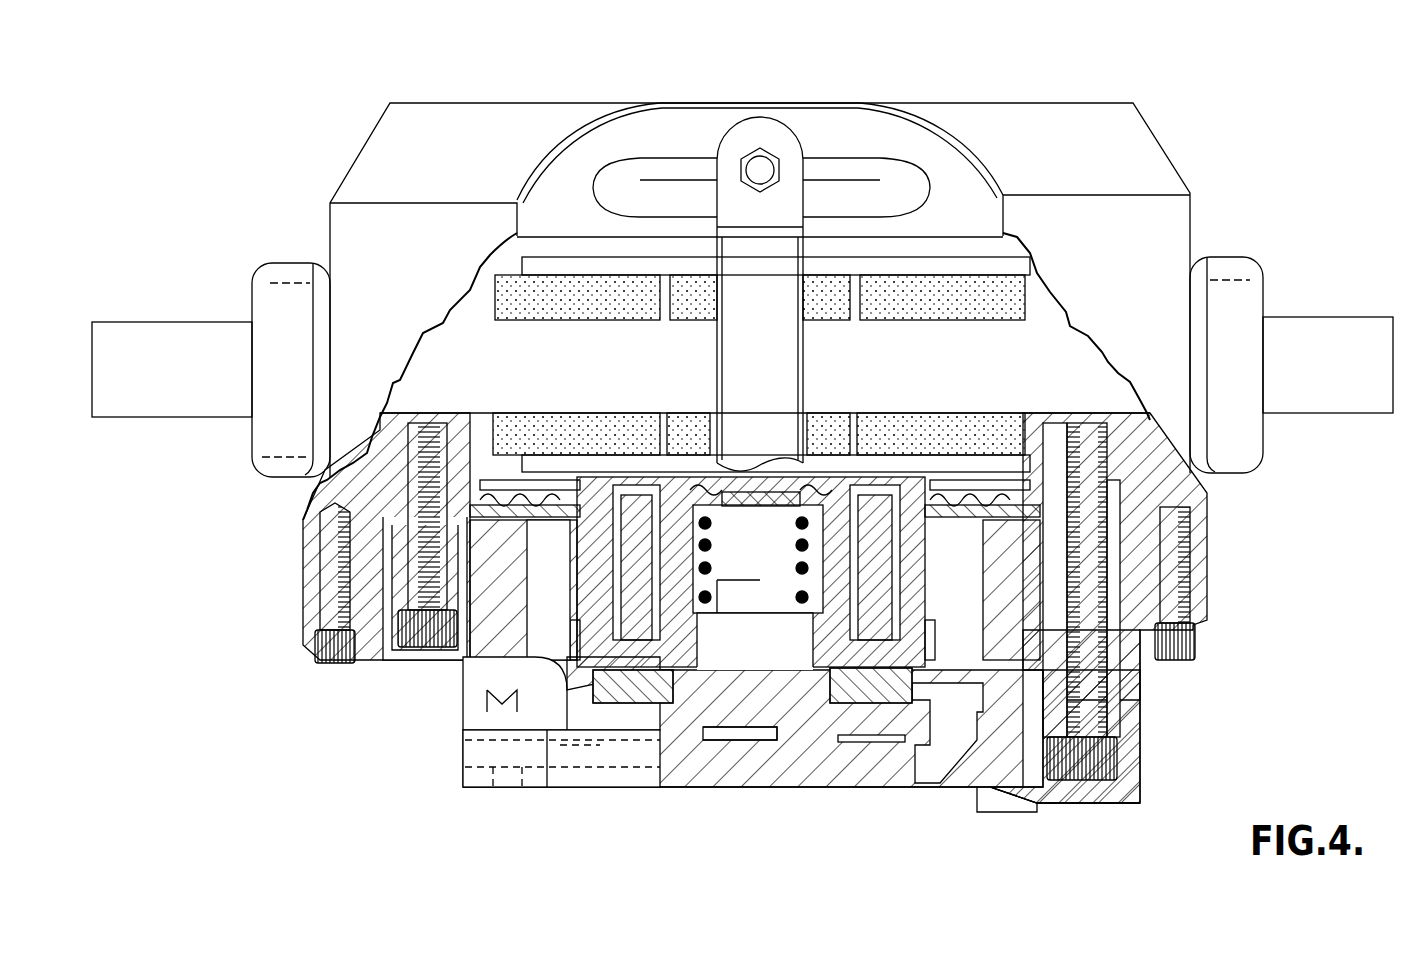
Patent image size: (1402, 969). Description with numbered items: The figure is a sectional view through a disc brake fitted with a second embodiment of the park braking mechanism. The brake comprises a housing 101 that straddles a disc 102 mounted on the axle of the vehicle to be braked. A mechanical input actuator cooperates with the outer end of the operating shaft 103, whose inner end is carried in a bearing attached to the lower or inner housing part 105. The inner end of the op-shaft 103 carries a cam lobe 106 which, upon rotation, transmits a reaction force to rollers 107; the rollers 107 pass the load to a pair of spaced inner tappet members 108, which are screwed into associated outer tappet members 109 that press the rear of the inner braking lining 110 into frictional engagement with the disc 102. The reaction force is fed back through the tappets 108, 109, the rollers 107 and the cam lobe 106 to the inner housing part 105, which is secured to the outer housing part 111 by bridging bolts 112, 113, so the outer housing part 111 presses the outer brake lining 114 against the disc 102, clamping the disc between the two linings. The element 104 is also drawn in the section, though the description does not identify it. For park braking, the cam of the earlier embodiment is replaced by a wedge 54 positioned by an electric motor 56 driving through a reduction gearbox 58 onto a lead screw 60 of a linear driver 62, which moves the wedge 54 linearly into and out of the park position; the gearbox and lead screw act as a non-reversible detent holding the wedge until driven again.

The housing 101 is at (1186, 120).
The disc 102 is at (1323, 378).
The operating shaft 103 is at (745, 703).
The piston seal 104 is at (860, 740).
The inner housing part 105 is at (1020, 770).
The cam lobe 106 is at (873, 720).
The rollers 107 is at (935, 680).
The inner tappet members 108 is at (430, 757).
The outer tappet members 109 is at (1120, 482).
The inner braking lining 110 is at (493, 438).
The outer housing part 111 is at (1161, 228).
The bridging bolt 112 is at (1178, 595).
The bridging bolt 113 is at (330, 600).
The outer brake lining 114 is at (547, 293).
The wedge 54 is at (748, 778).
The electric motor 56 is at (510, 720).
The reduction gearbox 58 is at (483, 773).
The lead screw 60 is at (560, 745).
The linear driver 62 is at (628, 792).